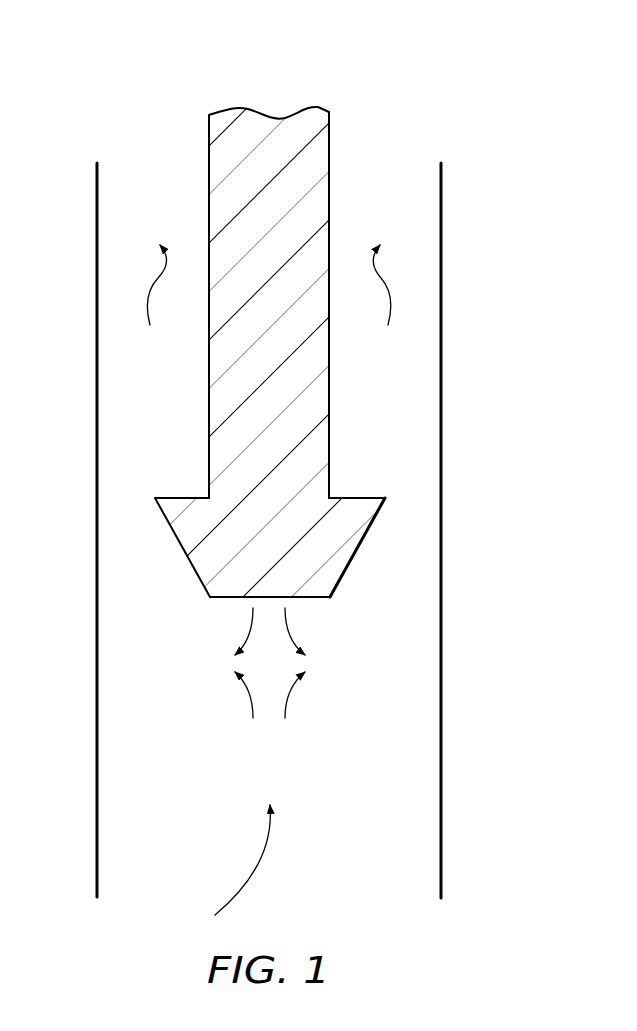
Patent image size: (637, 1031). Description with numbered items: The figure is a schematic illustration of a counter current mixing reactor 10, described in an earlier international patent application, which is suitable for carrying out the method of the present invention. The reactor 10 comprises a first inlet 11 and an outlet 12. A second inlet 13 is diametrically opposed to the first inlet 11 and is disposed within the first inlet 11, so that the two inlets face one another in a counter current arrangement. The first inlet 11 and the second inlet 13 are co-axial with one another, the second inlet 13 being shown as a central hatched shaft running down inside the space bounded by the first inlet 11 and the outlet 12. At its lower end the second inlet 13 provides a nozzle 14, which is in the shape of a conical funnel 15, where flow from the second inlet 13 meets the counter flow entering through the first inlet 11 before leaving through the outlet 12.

The counter current mixing reactor 10 is at (143, 58).
The first inlet 11 is at (98, 882).
The outlet 12 is at (440, 177).
The second inlet 13 is at (330, 362).
The nozzle 14 is at (180, 587).
The conical funnel 15 is at (365, 537).